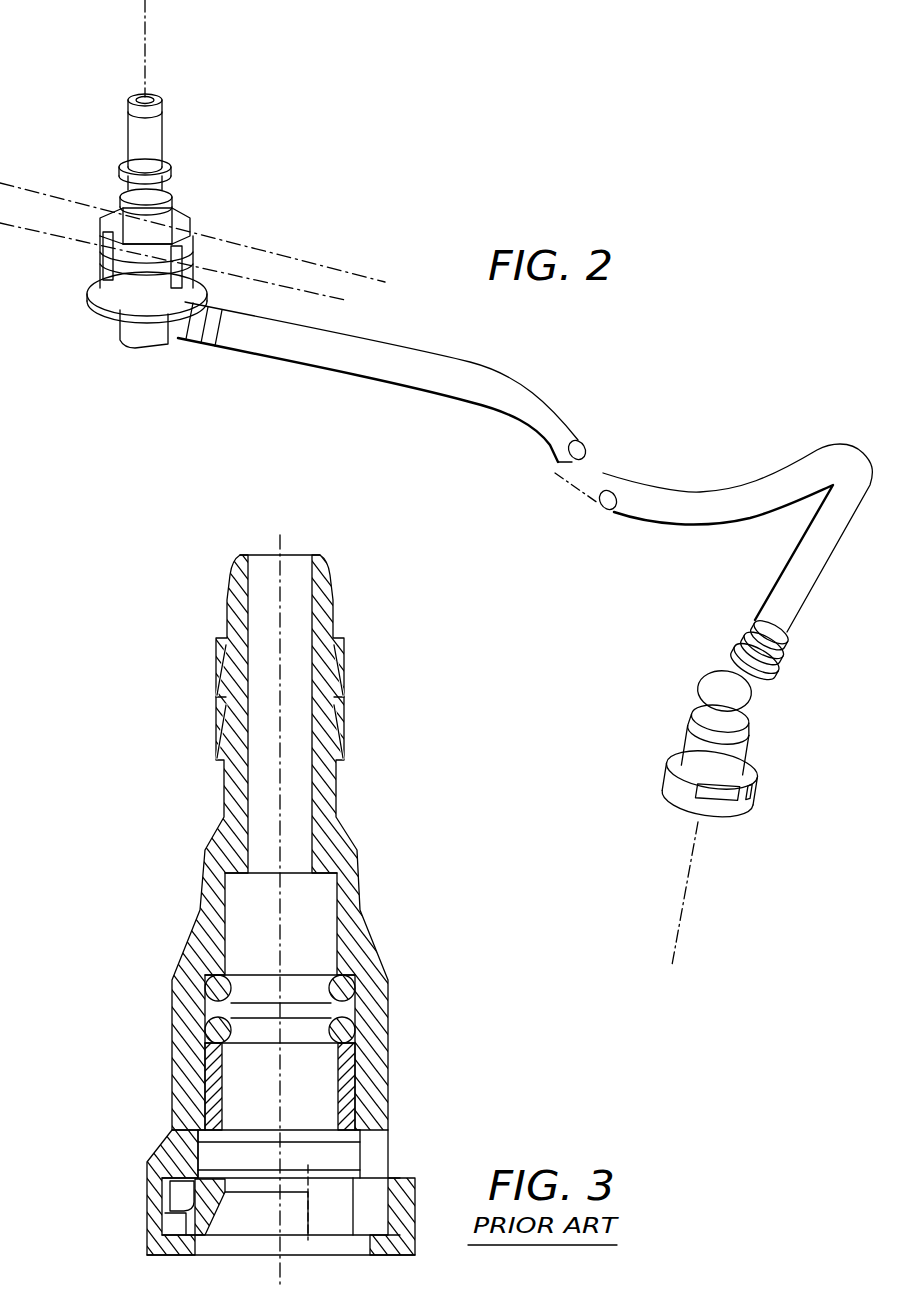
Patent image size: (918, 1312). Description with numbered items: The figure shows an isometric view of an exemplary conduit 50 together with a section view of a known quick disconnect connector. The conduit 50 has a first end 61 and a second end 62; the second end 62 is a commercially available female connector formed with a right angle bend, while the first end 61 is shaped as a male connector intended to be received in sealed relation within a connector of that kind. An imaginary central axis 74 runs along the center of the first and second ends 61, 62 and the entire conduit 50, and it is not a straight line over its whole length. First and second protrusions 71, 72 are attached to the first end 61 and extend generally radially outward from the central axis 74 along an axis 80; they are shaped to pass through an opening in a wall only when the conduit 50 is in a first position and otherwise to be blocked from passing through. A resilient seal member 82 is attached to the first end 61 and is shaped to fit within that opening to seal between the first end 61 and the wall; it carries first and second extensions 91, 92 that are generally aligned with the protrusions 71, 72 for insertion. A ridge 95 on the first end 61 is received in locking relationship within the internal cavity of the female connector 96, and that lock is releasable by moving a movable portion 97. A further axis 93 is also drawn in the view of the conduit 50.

In FIG. 2, the conduit 50 is at (487, 382).
In FIG. 2, the first end 61 is at (155, 142).
In FIG. 2, the second end 62 is at (738, 760).
In FIG. 2, the first protrusion 71 is at (190, 213).
In FIG. 2, the second protrusion 72 is at (118, 196).
In FIG. 2, the central axis 74 is at (147, 40).
In FIG. 2, the axis 80 is at (330, 262).
In FIG. 2, the resilient seal member 82 is at (130, 292).
In FIG. 2, the first extension 91 is at (218, 258).
In FIG. 2, the second extension 92 is at (98, 252).
In FIG. 2, the tube axis 93 is at (348, 301).
In FIG. 2, the ridge 95 is at (170, 177).
In FIG. 3, the female connector 96 is at (150, 832).
In FIG. 3, the movable portion 97 is at (425, 1196).